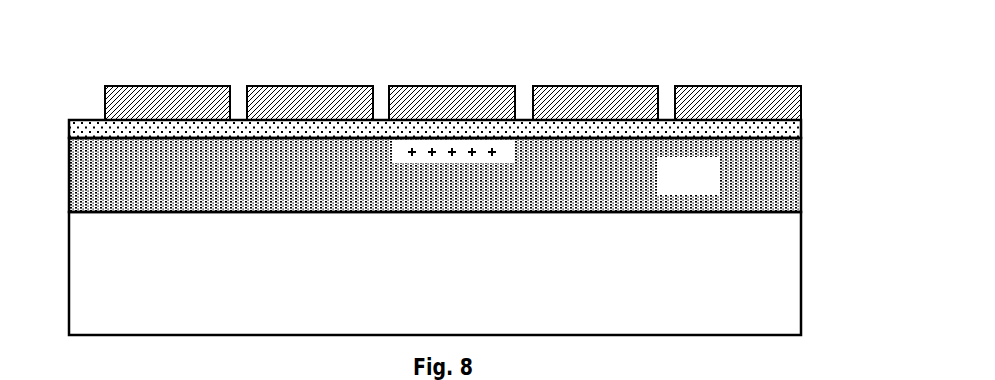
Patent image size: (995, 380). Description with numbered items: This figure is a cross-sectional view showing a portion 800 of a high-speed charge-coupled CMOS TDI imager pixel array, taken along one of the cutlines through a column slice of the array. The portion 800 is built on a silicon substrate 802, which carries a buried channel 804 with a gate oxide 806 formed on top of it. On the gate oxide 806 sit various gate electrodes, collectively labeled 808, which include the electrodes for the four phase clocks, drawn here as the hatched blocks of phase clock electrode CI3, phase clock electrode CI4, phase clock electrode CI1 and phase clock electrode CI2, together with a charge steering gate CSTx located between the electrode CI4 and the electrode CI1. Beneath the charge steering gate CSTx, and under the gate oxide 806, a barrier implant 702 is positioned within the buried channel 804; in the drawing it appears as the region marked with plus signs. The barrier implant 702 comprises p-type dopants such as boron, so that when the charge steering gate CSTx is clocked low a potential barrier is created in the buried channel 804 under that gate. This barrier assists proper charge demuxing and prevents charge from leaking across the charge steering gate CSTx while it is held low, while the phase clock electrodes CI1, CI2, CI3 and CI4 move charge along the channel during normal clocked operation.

The portion of imager pixel array 800 is at (450, 177).
The silicon substrate 802 is at (145, 308).
The buried channel 804 is at (710, 188).
The gate oxide 806 is at (96, 121).
The gate electrodes 808 is at (495, 70).
The barrier implant 702 is at (479, 161).
The phase clock electrode Cl1 CI1 is at (596, 86).
The phase clock electrode Cl2 CI2 is at (739, 86).
The phase clock electrode Cl3 CI3 is at (167, 86).
The phase clock electrode Cl4 CI4 is at (310, 86).
The charge steering gate CSTx is at (453, 86).